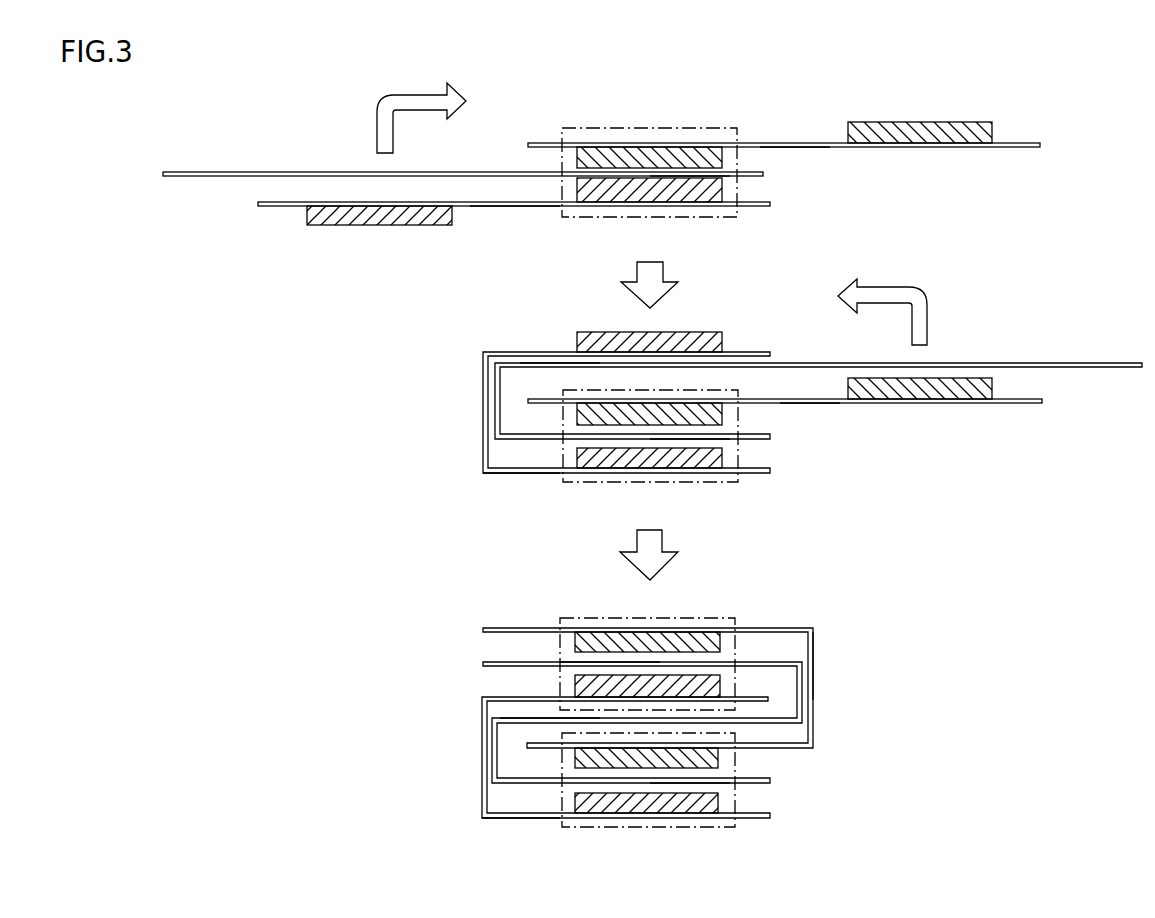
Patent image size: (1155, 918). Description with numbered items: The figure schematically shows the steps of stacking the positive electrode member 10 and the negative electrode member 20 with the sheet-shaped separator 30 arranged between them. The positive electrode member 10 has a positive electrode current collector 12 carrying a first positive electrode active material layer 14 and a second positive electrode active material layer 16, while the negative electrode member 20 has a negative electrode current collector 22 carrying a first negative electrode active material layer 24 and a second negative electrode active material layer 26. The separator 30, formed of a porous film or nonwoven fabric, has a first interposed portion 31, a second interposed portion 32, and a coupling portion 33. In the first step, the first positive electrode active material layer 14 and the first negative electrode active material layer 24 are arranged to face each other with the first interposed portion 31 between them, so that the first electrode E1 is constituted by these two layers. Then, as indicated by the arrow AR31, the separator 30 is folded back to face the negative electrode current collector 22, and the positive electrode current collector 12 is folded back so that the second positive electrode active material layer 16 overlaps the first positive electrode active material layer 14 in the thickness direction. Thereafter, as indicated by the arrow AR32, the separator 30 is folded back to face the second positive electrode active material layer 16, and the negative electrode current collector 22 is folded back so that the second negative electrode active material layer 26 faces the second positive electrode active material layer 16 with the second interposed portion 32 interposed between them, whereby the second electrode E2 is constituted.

The positive electrode member 10 is at (279, 216).
The positive electrode current collector 12 is at (515, 207).
The first positive electrode active material layer 14 is at (608, 190).
The second positive electrode active material layer 16 is at (380, 216).
The negative electrode member 20 is at (1031, 132).
The negative electrode current collector 22 is at (788, 142).
The first negative electrode active material layer 24 is at (617, 146).
The second negative electrode active material layer 26 is at (920, 121).
The separator 30 is at (208, 161).
The first interposed portion 31 is at (690, 178).
The second interposed portion 32 is at (613, 661).
The coupling portion 33 is at (548, 362).
The first electrode E1 is at (695, 127).
The second electrode E2 is at (721, 617).
The arrow AR31 is at (389, 104).
The arrow AR32 is at (915, 298).